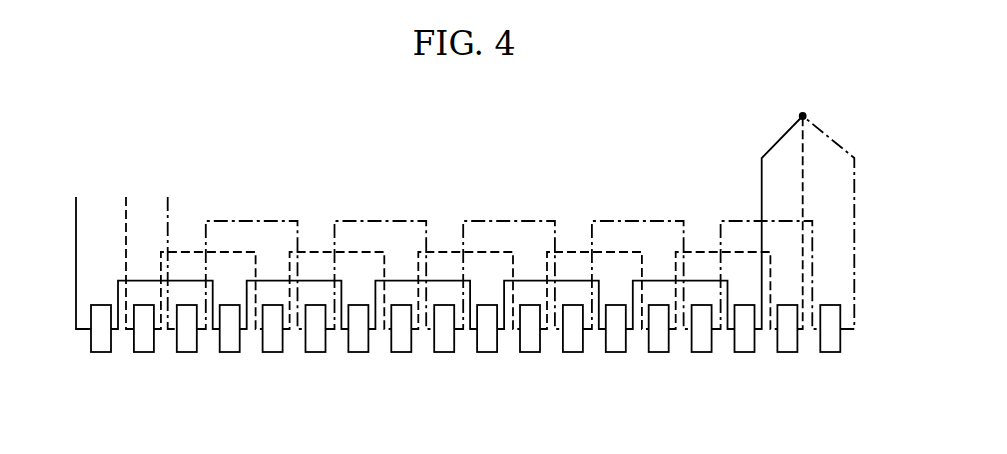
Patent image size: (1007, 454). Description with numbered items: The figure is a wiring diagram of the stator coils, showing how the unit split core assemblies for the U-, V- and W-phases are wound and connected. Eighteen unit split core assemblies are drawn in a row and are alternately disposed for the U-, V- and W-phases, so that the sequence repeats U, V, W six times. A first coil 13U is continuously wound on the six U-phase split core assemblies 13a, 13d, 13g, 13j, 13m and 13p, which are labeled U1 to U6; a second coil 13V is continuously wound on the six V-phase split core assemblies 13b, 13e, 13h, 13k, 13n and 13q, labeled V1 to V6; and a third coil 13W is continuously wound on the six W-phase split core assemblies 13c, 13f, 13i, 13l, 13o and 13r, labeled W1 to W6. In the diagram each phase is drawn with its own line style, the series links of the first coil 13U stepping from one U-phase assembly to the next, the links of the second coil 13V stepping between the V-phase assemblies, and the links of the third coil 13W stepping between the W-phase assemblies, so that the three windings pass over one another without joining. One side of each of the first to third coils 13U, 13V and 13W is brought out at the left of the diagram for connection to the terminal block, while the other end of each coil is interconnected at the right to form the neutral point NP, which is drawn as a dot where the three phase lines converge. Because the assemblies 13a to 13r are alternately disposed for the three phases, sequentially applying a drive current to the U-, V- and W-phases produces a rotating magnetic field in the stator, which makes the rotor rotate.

The first coil 13U is at (77, 250).
The second coil 13V is at (121, 250).
The third coil 13W is at (170, 250).
The neutral point NP is at (805, 210).
The U-phase split core assembly 13a is at (101, 352).
The V-phase split core assembly 13b is at (144, 352).
The W-phase split core assembly 13c is at (187, 352).
The U-phase split core assembly 13d is at (230, 352).
The V-phase split core assembly 13e is at (273, 352).
The W-phase split core assembly 13f is at (316, 352).
The U-phase split core assembly 13g is at (358, 352).
The V-phase split core assembly 13h is at (401, 352).
The W-phase split core assembly 13i is at (444, 352).
The U-phase split core assembly 13j is at (487, 352).
The V-phase split core assembly 13k is at (530, 352).
The W-phase split core assembly 13l is at (573, 352).
The U-phase split core assembly 13m is at (616, 352).
The V-phase split core assembly 13n is at (659, 352).
The W-phase split core assembly 13o is at (702, 352).
The U-phase split core assembly 13p is at (744, 352).
The V-phase split core assembly 13q is at (787, 352).
The W-phase split core assembly 13r is at (830, 352).